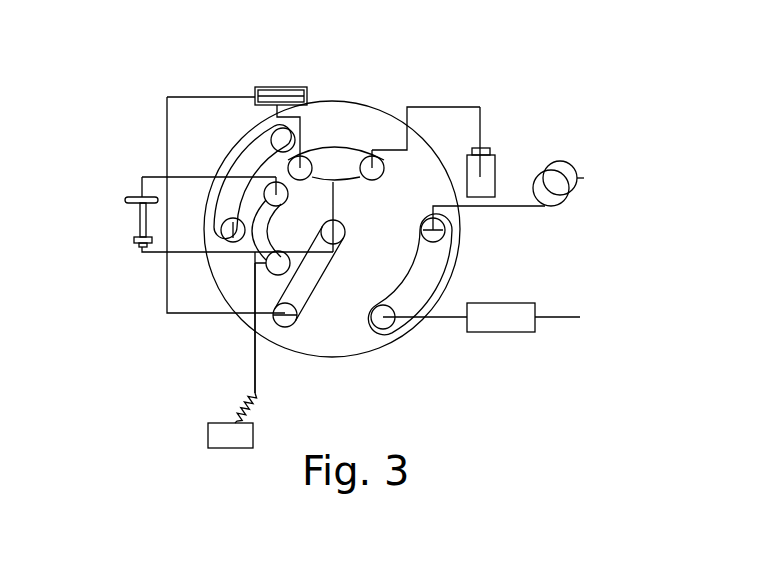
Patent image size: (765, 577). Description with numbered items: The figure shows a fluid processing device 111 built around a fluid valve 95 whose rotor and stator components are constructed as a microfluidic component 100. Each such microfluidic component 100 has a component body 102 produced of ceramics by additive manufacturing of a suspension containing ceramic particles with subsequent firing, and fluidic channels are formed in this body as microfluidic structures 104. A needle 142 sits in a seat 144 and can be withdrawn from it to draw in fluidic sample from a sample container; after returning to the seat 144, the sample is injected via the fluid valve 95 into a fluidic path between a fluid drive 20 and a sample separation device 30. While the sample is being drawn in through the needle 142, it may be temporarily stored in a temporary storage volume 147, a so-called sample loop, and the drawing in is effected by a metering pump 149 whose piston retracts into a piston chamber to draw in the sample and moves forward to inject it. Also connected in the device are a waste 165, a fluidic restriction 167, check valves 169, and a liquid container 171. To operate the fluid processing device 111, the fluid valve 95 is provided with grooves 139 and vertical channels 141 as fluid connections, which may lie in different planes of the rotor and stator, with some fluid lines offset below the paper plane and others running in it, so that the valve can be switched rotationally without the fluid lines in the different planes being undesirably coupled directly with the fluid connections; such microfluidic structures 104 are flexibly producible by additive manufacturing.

The fluid drive 20 is at (564, 163).
The sample separation device 30 is at (495, 315).
The fluid valve 95 is at (333, 102).
The microfluidic component 100 is at (399, 113).
The component body 102 is at (362, 348).
The microfluidic structures 104 is at (270, 178).
The fluid processing device 111 is at (495, 99).
The grooves 139 is at (322, 272).
The vertical channels 141 is at (272, 137).
The needle 142 is at (140, 222).
The seat 144 is at (135, 243).
The temporary storage volume 147 is at (135, 195).
The metering pump 149 is at (277, 87).
The waste 165 is at (210, 433).
The fluidic restriction 167 is at (238, 412).
The check valves 169 is at (408, 127).
The liquid container 171 is at (486, 177).